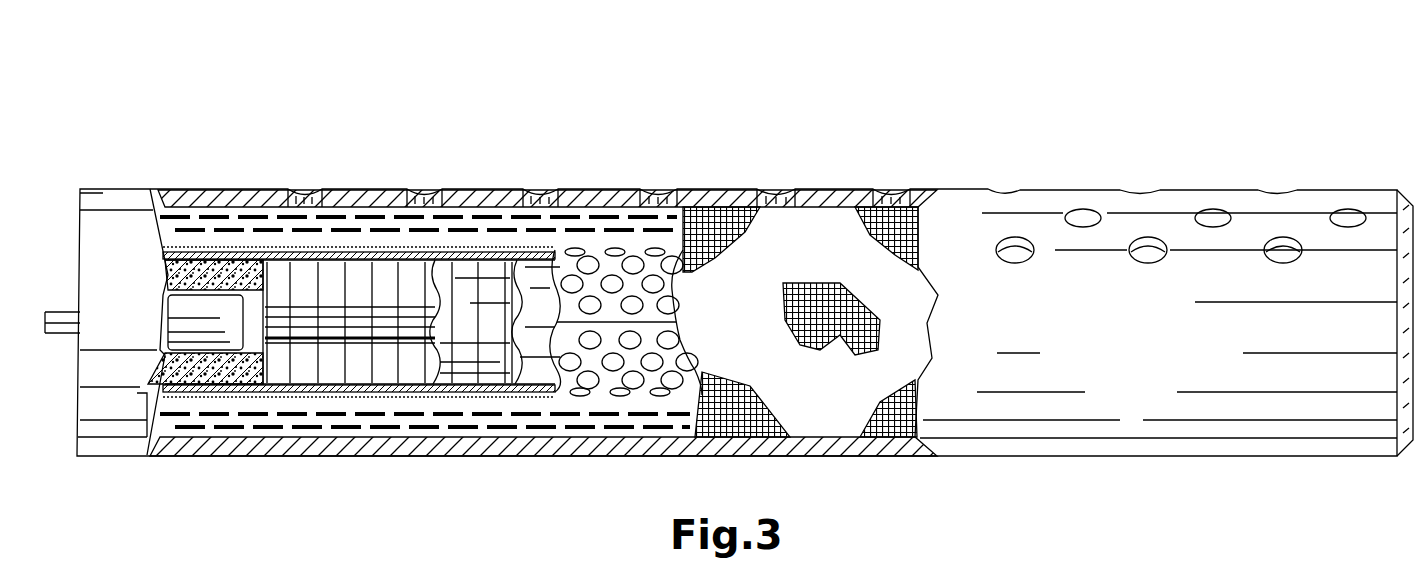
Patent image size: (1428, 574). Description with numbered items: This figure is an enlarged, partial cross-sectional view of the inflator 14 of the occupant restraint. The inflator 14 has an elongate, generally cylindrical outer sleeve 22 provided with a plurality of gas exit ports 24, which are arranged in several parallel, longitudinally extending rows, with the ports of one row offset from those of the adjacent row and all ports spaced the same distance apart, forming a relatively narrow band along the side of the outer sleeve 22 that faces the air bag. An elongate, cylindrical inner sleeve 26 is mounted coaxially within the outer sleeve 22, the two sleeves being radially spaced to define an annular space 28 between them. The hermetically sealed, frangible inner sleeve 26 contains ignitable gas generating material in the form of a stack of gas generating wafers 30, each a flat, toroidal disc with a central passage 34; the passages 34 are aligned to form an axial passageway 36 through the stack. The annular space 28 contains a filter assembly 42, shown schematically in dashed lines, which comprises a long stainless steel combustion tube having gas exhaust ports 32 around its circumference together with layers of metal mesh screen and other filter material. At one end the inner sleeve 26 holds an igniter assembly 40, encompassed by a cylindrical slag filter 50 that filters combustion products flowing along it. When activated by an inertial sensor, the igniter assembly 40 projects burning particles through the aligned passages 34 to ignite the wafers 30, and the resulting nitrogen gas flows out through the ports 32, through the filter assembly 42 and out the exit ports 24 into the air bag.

The inflator 14 is at (482, 132).
The outer sleeve 22 is at (836, 190).
The gas exit ports 24 is at (1085, 213).
The inner sleeve 26 is at (363, 242).
The annular space 28 is at (337, 418).
The gas generating wafers 30 is at (473, 360).
The gas exhaust ports 32 is at (612, 280).
The central passage 34 is at (305, 306).
The axial passageway 36 is at (388, 312).
The igniter assembly 40 is at (193, 280).
The filter assembly 42 is at (533, 225).
The slag filter 50 is at (197, 308).